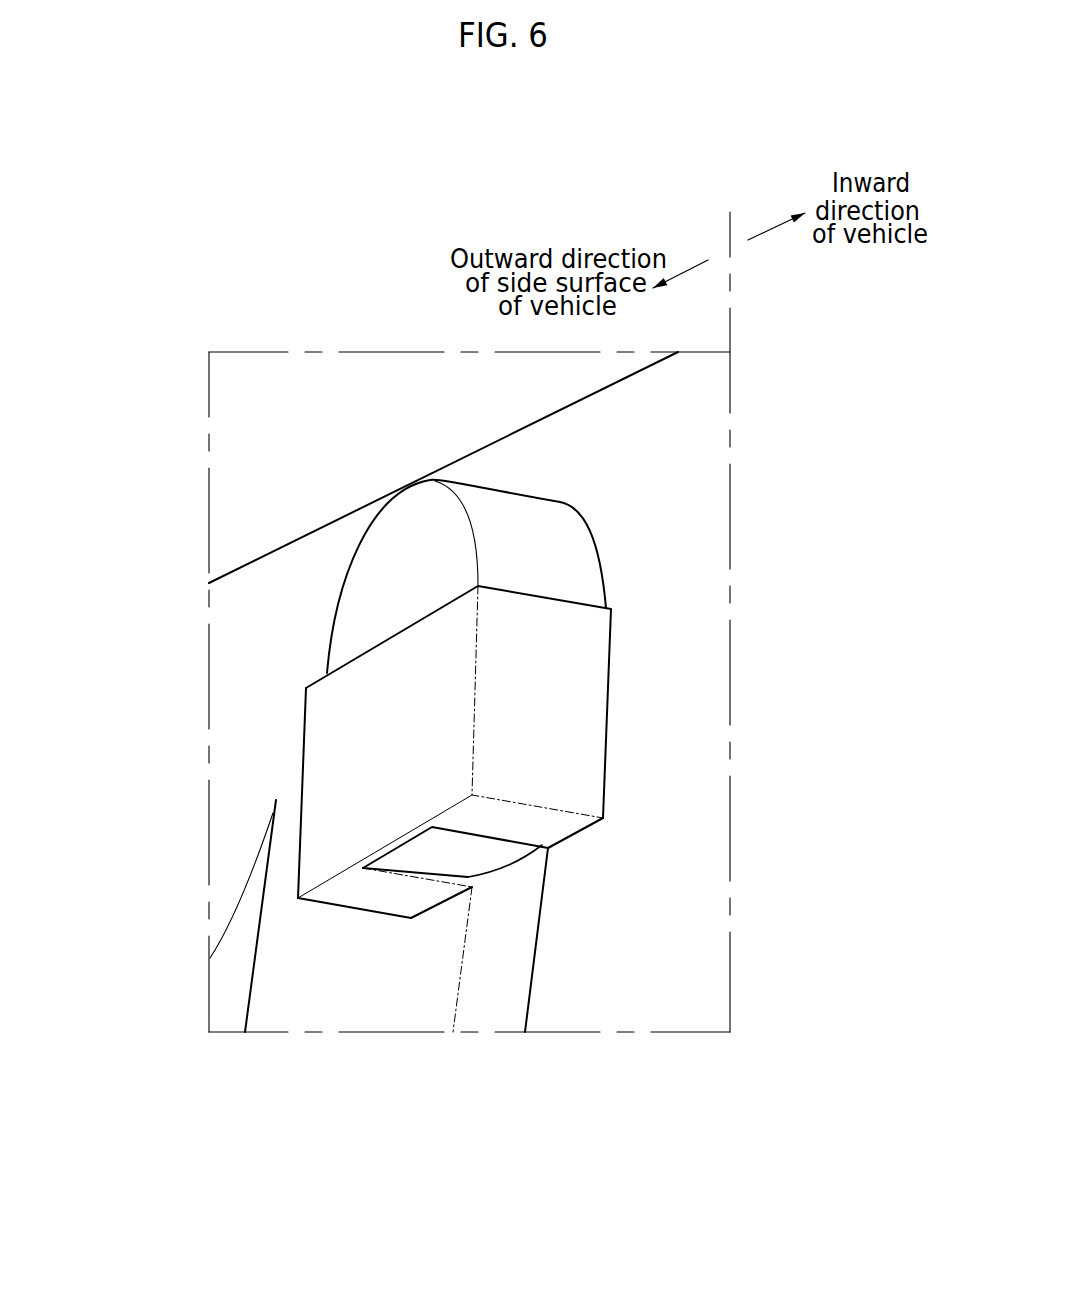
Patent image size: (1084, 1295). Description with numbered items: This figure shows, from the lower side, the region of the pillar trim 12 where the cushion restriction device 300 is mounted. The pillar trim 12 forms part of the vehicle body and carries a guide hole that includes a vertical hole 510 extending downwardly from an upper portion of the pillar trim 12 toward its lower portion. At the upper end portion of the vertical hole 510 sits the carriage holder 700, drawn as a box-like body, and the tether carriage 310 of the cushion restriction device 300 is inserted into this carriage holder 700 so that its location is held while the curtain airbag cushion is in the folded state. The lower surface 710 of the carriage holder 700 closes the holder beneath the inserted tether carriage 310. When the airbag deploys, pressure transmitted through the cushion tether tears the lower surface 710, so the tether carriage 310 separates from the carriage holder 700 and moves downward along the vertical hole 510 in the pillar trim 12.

The pillar trim 12 is at (690, 722).
The cushion restriction device 300 is at (380, 605).
The tether carriage 310 is at (408, 535).
The carriage holder 700 is at (360, 752).
The lower surface 710 is at (547, 828).
The vertical hole 510 is at (488, 987).